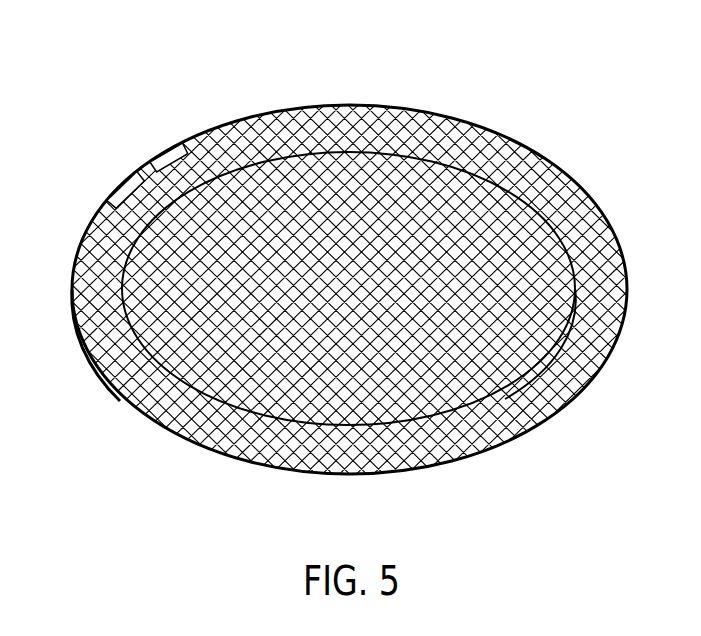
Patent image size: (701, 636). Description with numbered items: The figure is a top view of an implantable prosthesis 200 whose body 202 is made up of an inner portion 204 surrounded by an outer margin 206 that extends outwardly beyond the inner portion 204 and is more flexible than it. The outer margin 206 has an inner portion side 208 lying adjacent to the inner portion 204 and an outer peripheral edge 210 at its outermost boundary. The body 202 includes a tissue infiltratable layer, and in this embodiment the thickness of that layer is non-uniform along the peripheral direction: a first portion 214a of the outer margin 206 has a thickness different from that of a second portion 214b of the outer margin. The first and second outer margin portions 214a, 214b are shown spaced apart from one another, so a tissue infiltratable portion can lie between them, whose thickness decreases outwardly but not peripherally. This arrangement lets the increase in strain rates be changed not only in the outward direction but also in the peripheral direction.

The prosthesis 200 is at (556, 77).
The body 202 is at (583, 193).
The inner portion 204 is at (165, 322).
The outer margin 206 is at (192, 147).
The inner portion side 208 is at (533, 370).
The outer peripheral edge 210 is at (93, 363).
The first portion of the outer margin 214a is at (120, 186).
The second portion of the outer margin 214b is at (162, 157).